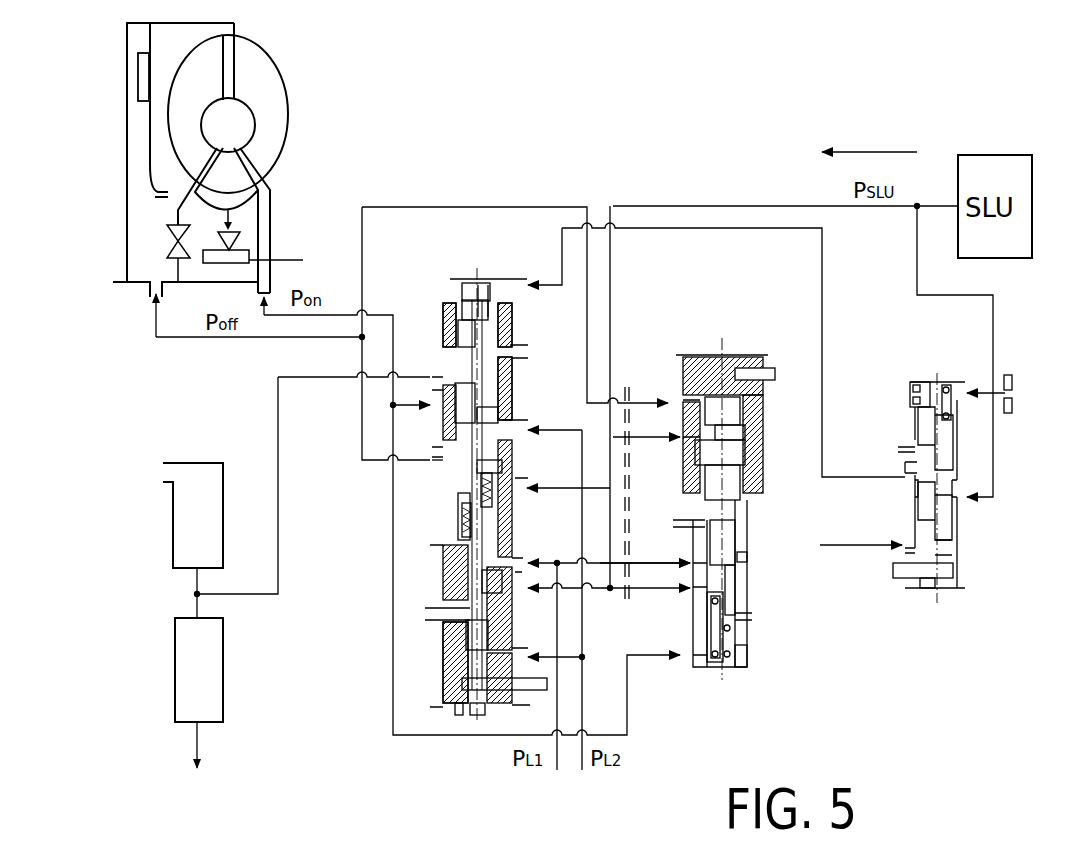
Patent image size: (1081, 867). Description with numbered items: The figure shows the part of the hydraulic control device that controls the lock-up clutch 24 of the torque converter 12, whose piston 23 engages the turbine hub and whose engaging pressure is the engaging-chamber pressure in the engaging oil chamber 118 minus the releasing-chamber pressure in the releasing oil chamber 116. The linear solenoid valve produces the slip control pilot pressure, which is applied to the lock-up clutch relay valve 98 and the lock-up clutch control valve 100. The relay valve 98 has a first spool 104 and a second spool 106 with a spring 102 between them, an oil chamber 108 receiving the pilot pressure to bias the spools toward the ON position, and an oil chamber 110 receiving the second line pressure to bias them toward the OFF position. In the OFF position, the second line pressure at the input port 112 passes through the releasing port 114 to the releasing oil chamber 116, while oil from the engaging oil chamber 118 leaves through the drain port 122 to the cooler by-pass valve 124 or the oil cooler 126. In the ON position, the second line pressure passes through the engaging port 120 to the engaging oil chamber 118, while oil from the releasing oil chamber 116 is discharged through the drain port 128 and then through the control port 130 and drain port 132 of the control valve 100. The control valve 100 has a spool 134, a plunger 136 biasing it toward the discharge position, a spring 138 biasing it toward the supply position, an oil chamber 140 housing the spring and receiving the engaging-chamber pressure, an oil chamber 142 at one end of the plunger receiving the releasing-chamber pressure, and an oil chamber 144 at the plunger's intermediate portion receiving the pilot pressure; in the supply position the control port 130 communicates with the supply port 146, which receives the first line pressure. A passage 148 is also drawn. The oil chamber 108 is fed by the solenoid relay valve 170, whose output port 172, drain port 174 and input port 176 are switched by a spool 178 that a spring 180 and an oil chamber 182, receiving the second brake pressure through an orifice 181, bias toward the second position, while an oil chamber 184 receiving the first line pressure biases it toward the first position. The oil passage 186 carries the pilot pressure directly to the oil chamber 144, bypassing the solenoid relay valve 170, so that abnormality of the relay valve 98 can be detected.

The torque converter 12 is at (322, 93).
The piston 23 is at (148, 135).
The lock-up clutch 24 is at (138, 82).
The lock-up clutch relay valve 98 is at (496, 198).
The lock-up clutch control valve 100 is at (748, 690).
The spring 102 is at (462, 520).
The first spool 104 is at (515, 333).
The second spool 106 is at (443, 600).
The oil chamber 108 is at (455, 287).
The oil chamber 110 is at (445, 660).
The input port 112 is at (518, 410).
The releasing port 114 is at (432, 442).
The releasing oil chamber 116 is at (137, 217).
The engaging oil chamber 118 is at (146, 36).
The engaging port 120 is at (432, 395).
The drain port 122 is at (437, 347).
The cooler by-pass valve 124 is at (212, 672).
The oil cooler 126 is at (198, 475).
The drain port 128 is at (545, 450).
The control port 130 is at (700, 600).
The drain port 132 is at (748, 608).
The spool 134 is at (742, 590).
The plunger 136 is at (745, 480).
The spring 138 is at (718, 666).
The oil chamber 140 is at (748, 655).
The oil chamber 142 is at (745, 400).
The oil chamber 144 is at (745, 440).
The supply port 146 is at (700, 553).
The oil passage 148 is at (600, 503).
The solenoid relay valve 170 is at (945, 632).
The output port 172 is at (912, 488).
The drain port 174 is at (912, 440).
The input port 176 is at (960, 505).
The spool 178 is at (955, 530).
The spring 180 is at (925, 382).
The orifice 181 is at (1014, 410).
The oil chamber 182 is at (910, 393).
The oil chamber 184 is at (905, 552).
The oil passage 186 is at (678, 205).